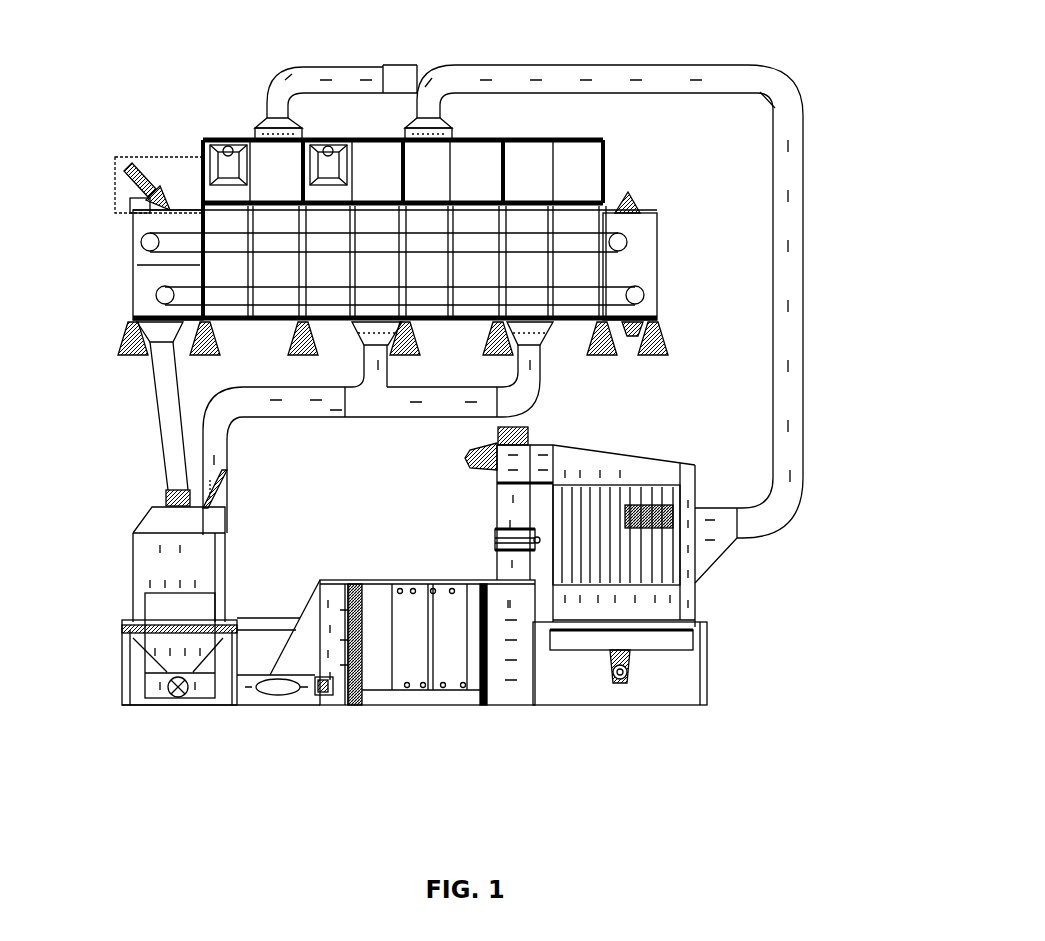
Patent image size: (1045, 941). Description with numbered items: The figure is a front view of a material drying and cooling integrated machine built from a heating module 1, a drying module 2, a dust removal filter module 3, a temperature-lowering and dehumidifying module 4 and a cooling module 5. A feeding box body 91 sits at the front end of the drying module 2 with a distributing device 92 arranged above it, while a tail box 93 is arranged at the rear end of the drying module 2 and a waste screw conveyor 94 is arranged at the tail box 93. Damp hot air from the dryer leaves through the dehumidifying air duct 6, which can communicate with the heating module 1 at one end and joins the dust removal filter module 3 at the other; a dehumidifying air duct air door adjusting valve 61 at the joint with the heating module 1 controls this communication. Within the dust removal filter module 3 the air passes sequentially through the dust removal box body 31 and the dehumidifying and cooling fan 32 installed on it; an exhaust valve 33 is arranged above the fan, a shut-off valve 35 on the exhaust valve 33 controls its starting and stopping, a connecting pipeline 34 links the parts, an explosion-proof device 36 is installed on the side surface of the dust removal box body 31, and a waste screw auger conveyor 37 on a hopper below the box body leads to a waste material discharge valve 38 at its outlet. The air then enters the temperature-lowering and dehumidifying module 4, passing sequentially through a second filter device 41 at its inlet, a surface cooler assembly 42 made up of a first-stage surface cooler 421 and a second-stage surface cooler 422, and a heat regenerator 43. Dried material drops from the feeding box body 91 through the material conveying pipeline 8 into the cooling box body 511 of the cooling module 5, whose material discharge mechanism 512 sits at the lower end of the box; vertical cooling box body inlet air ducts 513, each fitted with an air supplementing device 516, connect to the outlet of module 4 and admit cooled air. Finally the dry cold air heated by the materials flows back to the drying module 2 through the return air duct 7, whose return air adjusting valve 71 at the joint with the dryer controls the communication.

The heating module 1 is at (257, 162).
The drying module 2 is at (280, 227).
The dust removal filter module 3 is at (658, 477).
The temperature-lowering and dehumidifying module 4 is at (348, 696).
The cooling module 5 is at (112, 569).
The dehumidifying air duct 6 is at (737, 82).
The return air duct 7 is at (290, 408).
The material conveying pipeline 8 is at (167, 400).
The dust removal box body 31 is at (682, 488).
The dehumidifying and cooling fan 32 is at (473, 458).
The exhaust valve 33 is at (527, 440).
The connecting pipeline 34 is at (507, 495).
The shut-off valve 35 is at (500, 540).
The explosion-proof device 36 is at (660, 475).
The waste screw auger conveyor 37 is at (592, 651).
The waste material discharge valve 38 is at (628, 672).
The second filter device 41 is at (488, 686).
The surface cooler assembly 42 is at (515, 762).
The heat regenerator 43 is at (355, 585).
The dehumidifying air duct air door adjusting valve 61 is at (300, 138).
The return air adjusting valve 71 is at (403, 336).
The feeding box body 91 is at (147, 278).
The distributing device 92 is at (153, 197).
The tail box 93 is at (647, 248).
The waste screw conveyor 94 is at (636, 330).
The first-stage surface cooler 421 is at (443, 682).
The second-stage surface cooler 422 is at (407, 683).
The cooling box body 511 is at (150, 557).
The material discharge mechanism 512 is at (165, 668).
The vertical cooling box body inlet air duct 513 is at (147, 653).
The air supplementing device 516 is at (315, 700).